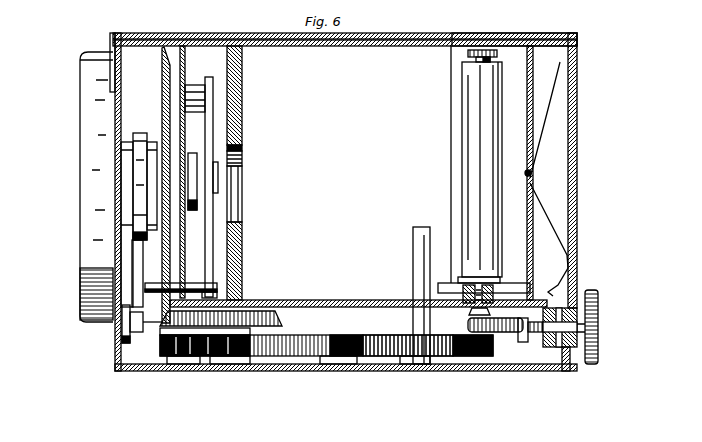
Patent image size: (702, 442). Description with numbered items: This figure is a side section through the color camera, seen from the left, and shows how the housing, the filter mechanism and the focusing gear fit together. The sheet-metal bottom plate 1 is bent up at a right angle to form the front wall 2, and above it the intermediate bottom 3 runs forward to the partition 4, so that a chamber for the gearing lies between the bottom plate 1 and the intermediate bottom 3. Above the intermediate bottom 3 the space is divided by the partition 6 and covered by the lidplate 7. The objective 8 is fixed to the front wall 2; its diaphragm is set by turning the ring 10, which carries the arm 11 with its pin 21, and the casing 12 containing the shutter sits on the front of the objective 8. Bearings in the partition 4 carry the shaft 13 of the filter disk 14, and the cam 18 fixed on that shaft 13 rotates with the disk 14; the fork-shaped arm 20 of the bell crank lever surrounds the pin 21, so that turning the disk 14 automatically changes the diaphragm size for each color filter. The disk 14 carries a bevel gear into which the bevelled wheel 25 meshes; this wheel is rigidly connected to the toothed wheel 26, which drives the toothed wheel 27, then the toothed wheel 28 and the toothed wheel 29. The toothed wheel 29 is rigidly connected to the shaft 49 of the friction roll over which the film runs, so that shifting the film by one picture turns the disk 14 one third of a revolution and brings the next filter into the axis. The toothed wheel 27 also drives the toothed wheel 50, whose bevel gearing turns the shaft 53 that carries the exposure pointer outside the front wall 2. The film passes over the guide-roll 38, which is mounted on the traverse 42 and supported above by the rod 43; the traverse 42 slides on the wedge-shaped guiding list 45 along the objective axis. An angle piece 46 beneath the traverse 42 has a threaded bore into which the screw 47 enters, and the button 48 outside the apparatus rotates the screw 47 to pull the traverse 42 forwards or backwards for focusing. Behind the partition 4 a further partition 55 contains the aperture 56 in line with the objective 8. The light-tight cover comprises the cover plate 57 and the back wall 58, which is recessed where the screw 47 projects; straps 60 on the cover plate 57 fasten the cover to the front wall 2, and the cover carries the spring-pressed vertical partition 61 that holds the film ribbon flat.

The bottom plate 1 is at (268, 372).
The front wall 2 is at (115, 348).
The intermediate bottom 3 is at (363, 337).
The partition 4 is at (230, 138).
The partition 6 is at (339, 211).
The lidplate 7 is at (331, 47).
The objective 8 is at (128, 183).
The ring 10 is at (121, 147).
The arm 11 is at (140, 260).
The casing 12 is at (88, 113).
The shaft 13 is at (202, 194).
The disk 14 is at (172, 70).
The cam 18 is at (240, 165).
The arm 20 is at (242, 117).
The pin 21 is at (198, 283).
The bevelled wheel 25 is at (257, 312).
The toothed wheel 26 is at (243, 310).
The toothed wheel 27 is at (285, 328).
The toothed wheel 28 is at (293, 342).
The toothed wheel 29 is at (460, 360).
The guide-roll 38 is at (503, 147).
The traverse 42 is at (527, 283).
The rod 43 is at (485, 52).
The guiding list 45 is at (507, 302).
The angle piece 46 is at (525, 338).
The screw 47 is at (493, 330).
The button 48 is at (599, 303).
The shaft 49 is at (413, 296).
The toothed wheel 50 is at (145, 333).
The shaft 53 is at (124, 340).
The partition 55 is at (242, 80).
The aperture 56 is at (236, 196).
The cover plate 57 is at (445, 34).
The back wall 58 is at (576, 165).
The straps 60 is at (110, 72).
The partition 61 is at (532, 80).